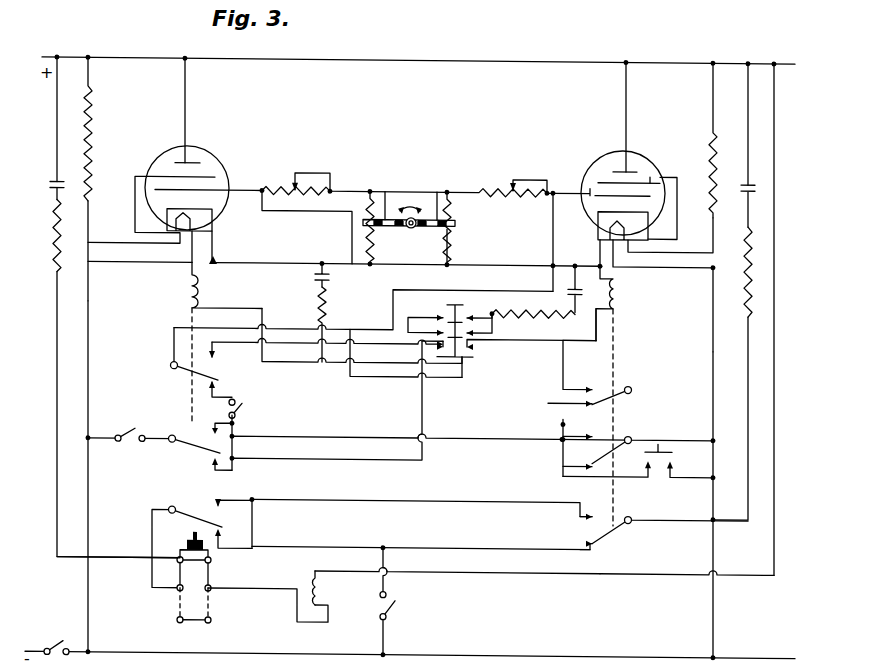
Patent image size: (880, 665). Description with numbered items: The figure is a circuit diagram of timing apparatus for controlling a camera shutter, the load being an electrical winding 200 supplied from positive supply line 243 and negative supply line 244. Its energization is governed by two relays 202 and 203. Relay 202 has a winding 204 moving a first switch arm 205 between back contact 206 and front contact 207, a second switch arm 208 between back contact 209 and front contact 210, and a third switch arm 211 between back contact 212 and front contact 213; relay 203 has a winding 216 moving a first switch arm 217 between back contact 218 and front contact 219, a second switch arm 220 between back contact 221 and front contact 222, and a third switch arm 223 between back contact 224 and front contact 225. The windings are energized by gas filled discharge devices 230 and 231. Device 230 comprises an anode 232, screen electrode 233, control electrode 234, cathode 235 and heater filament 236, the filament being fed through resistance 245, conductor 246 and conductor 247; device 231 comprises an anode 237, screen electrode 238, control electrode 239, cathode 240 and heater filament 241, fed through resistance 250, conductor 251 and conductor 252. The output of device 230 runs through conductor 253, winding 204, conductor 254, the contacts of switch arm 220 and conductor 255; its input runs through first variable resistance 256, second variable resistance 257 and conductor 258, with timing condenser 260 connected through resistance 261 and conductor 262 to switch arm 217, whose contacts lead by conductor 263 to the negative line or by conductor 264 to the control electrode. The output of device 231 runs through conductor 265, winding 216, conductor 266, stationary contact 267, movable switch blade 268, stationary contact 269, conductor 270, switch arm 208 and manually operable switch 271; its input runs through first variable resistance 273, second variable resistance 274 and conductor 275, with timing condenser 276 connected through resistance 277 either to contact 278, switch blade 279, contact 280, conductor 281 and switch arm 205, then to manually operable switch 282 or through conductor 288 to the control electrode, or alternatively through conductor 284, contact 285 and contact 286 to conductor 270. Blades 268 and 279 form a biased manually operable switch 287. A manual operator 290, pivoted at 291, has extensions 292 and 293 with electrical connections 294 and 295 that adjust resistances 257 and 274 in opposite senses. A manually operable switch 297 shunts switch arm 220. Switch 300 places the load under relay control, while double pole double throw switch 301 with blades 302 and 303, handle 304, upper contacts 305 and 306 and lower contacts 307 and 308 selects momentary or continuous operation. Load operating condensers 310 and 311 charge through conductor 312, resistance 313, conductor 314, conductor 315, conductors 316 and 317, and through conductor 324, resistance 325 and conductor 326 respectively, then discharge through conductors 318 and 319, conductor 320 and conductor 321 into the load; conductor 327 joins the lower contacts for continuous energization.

The electrical winding 200 is at (322, 592).
The relay 202 is at (212, 297).
The relay 203 is at (628, 297).
The electrical winding 204 is at (183, 280).
The first switch arm 205 is at (180, 368).
The back contact 206 is at (218, 383).
The front contact 207 is at (218, 356).
The second switch arm 208 is at (178, 452).
The back contact 209 is at (211, 468).
The front contact 210 is at (205, 427).
The third switch arm 211 is at (180, 497).
The back contact 212 is at (240, 532).
The front contact 213 is at (226, 498).
The winding 216 is at (622, 303).
The first switch arm 217 is at (636, 390).
The back contact 218 is at (557, 405).
The front contact 219 is at (563, 384).
The second switch arm 220 is at (628, 434).
The back contact 221 is at (561, 468).
The front contact 222 is at (561, 436).
The third switch arm 223 is at (622, 520).
The back contact 224 is at (575, 540).
The front contact 225 is at (573, 511).
The discharge device 230 is at (222, 152).
The discharge device 231 is at (592, 150).
The anode 232 is at (177, 154).
The screen electrode 233 is at (151, 175).
The control electrode 234 is at (228, 186).
The cathode 235 is at (215, 218).
The heater filament 236 is at (205, 237).
The anode 237 is at (630, 163).
The screen electrode 238 is at (656, 168).
The control electrode 239 is at (585, 175).
The cathode 240 is at (598, 219).
The heater filament 241 is at (600, 236).
The positive supply line 243 is at (355, 62).
The negative supply line 244 is at (33, 642).
The resistance 245 is at (90, 129).
The conductor 246 is at (88, 213).
The conductor 247 is at (88, 381).
The resistance 250 is at (720, 134).
The conductor 251 is at (684, 246).
The conductor 252 is at (712, 336).
The conductor 253 is at (195, 88).
The conductor 254 is at (308, 426).
The conductor 255 is at (694, 426).
The first variable resistance 256 is at (278, 160).
The second variable resistance 257 is at (373, 260).
The conductor 258 is at (292, 264).
The timing condenser 260 is at (316, 288).
The resistance 261 is at (316, 316).
The conductor 262 is at (298, 377).
The conductor 263 is at (558, 420).
The conductor 264 is at (535, 368).
The conductor 265 is at (634, 88).
The conductor 266 is at (561, 336).
The stationary contact 267 is at (473, 346).
The movable switch blade 268 is at (430, 376).
The stationary contact 269 is at (410, 352).
The conductor 270 is at (428, 414).
The manually operable switch 271 is at (128, 425).
The first variable resistance 273 is at (505, 194).
The second variable resistance 274 is at (452, 238).
The conductor 275 is at (546, 248).
The timing condenser 276 is at (550, 306).
The resistance 277 is at (517, 295).
The contact 278 is at (474, 315).
The switch blade 279 is at (442, 302).
The contact 280 is at (405, 310).
The conductor 281 is at (358, 320).
The manually operable switch 282 is at (239, 406).
The conductor 284 is at (523, 328).
The contact 285 is at (493, 331).
The contact 286 is at (424, 327).
The manually operable switch 287 is at (455, 296).
The conductor 288 is at (278, 352).
The manual operator 290 is at (408, 180).
The pivot 291 is at (416, 225).
The extension 292 is at (354, 228).
The extension 293 is at (455, 210).
The electrical connection 294 is at (385, 178).
The electrical connection 295 is at (437, 178).
The manually operable switch 297 is at (657, 474).
The switch 300 is at (397, 605).
The double pole, double throw switch 301 is at (166, 593).
The blade 302 is at (176, 572).
The blade 303 is at (218, 582).
The handle 304 is at (188, 540).
The upper contact 305 is at (174, 557).
The upper contact 306 is at (212, 560).
The lower contact 307 is at (177, 620).
The lower contact 308 is at (212, 622).
The load operating condenser 310 is at (52, 182).
The load operating condenser 311 is at (747, 168).
The conductor 312 is at (54, 111).
The resistance 313 is at (53, 243).
The conductor 314 is at (54, 332).
The conductor 315 is at (152, 586).
The conductor 316 is at (345, 540).
The conductor 317 is at (390, 556).
The conductor 318 is at (282, 501).
The conductor 319 is at (256, 510).
The conductor 320 is at (280, 606).
The conductor 321 is at (587, 570).
The conductor 324 is at (742, 92).
The resistance 325 is at (745, 272).
The conductor 326 is at (745, 368).
The conductor 327 is at (194, 622).